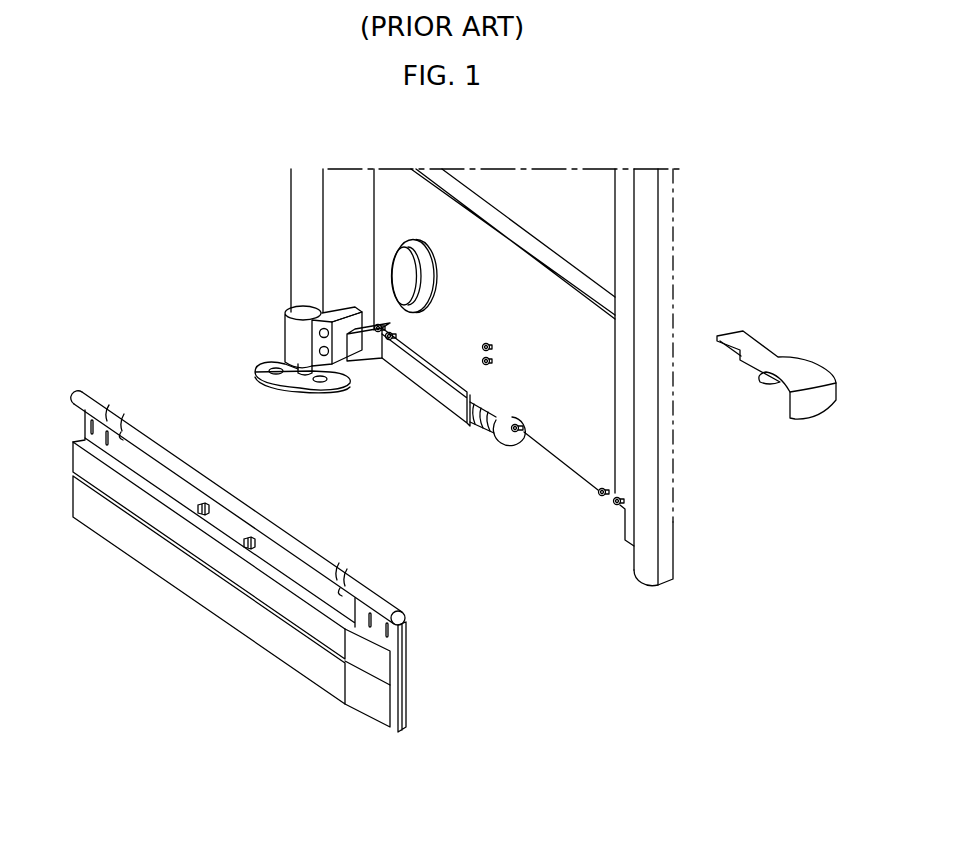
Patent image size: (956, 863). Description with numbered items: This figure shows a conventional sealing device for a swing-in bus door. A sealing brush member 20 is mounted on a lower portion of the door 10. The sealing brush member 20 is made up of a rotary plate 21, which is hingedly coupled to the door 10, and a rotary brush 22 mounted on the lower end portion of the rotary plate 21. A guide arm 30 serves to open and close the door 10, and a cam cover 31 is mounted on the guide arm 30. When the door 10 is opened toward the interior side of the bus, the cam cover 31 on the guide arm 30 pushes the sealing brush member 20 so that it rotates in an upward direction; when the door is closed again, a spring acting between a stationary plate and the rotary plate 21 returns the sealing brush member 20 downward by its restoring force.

The door 10 is at (478, 240).
The sealing brush member 20 is at (226, 567).
The rotary plate 21 is at (263, 583).
The rotary brush 22 is at (272, 637).
The guide arm 30 is at (449, 396).
The cam cover 31 is at (807, 370).